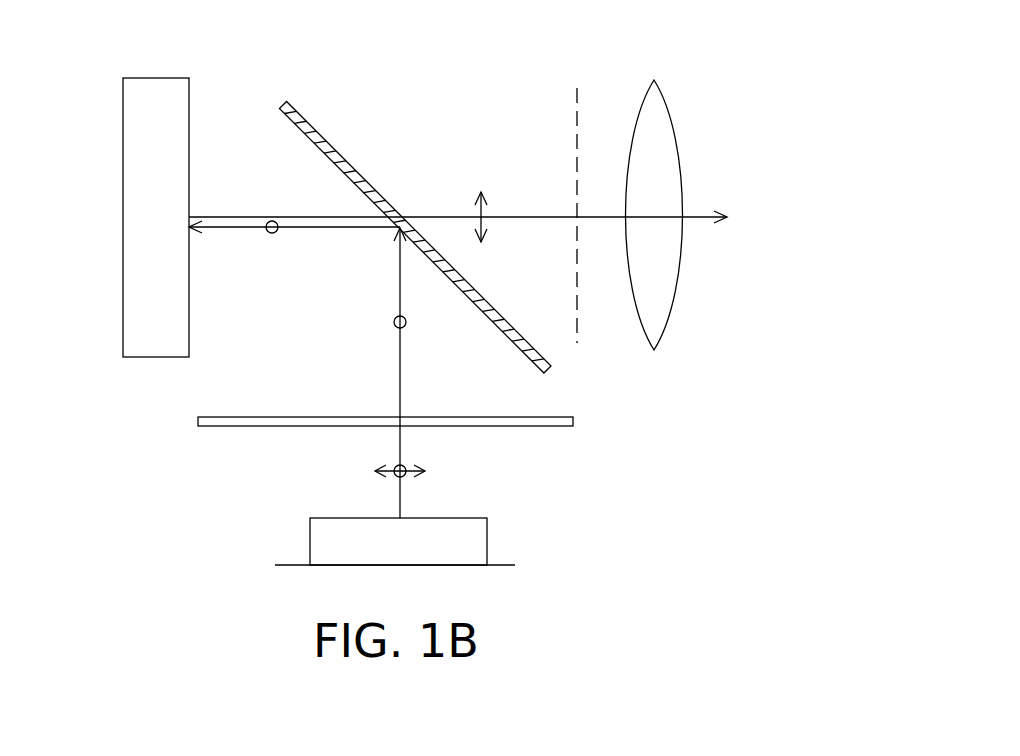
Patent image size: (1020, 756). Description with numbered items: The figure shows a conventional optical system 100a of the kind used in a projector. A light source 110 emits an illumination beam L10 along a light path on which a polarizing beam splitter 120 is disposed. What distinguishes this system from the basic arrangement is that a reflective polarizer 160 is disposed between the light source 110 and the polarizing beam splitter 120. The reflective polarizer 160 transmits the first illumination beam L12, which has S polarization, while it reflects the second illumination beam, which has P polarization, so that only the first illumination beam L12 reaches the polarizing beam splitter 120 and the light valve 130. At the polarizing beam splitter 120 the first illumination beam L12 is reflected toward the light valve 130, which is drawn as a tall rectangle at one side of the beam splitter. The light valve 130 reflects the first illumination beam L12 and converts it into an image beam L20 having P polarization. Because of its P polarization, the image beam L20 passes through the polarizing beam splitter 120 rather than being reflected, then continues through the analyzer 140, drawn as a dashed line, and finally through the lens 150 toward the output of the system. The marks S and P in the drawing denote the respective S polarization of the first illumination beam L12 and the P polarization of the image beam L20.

The optical system 100a is at (778, 621).
The light source 110 is at (478, 543).
The polarizing beam splitter 120 is at (550, 366).
The light valve 130 is at (158, 342).
The analyzer 140 is at (578, 117).
The lens 150 is at (663, 117).
The reflective polarizer 160 is at (488, 427).
The illumination beam L10 is at (400, 497).
The first illumination beam L12 is at (340, 228).
The image beam L20 is at (530, 217).
The P polarization P is at (477, 208).
The S polarization S is at (272, 233).